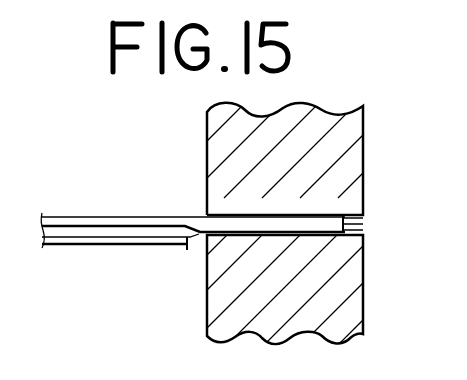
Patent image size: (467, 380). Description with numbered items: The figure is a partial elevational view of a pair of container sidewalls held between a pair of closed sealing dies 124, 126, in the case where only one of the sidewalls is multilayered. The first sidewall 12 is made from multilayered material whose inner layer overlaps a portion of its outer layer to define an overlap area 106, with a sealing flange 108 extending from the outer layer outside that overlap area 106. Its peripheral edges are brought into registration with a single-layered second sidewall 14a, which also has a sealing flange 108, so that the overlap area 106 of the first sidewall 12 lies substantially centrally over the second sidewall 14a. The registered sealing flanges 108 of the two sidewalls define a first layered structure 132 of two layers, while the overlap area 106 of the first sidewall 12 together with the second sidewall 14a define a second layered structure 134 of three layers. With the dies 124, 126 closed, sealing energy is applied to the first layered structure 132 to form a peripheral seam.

The first sidewall 12 is at (122, 226).
The overlap area 106 is at (155, 227).
The second layered structure 134 is at (168, 245).
The single-layered sidewall 14a is at (187, 250).
The sealing die 124 is at (343, 150).
The sealing die 126 is at (337, 272).
The first layered structure 132 is at (328, 213).
The sealing flange 108 is at (363, 219).